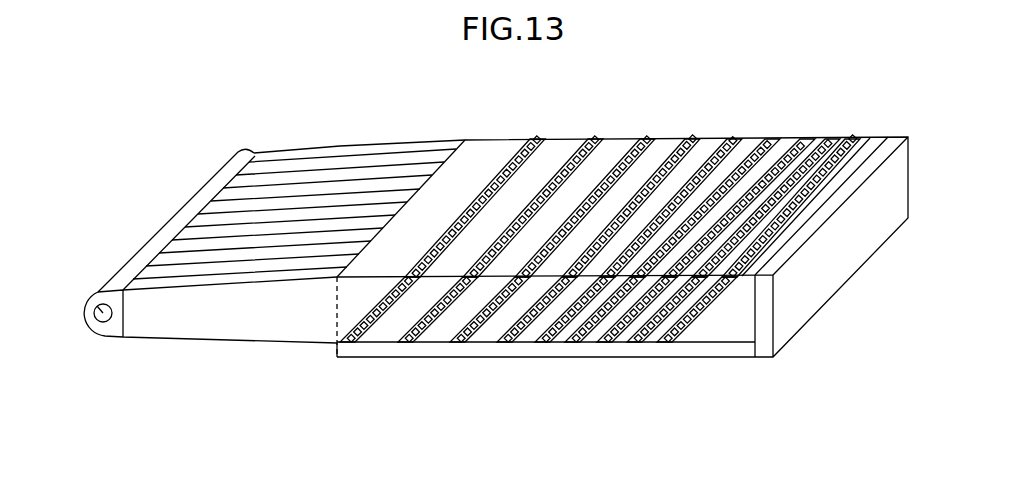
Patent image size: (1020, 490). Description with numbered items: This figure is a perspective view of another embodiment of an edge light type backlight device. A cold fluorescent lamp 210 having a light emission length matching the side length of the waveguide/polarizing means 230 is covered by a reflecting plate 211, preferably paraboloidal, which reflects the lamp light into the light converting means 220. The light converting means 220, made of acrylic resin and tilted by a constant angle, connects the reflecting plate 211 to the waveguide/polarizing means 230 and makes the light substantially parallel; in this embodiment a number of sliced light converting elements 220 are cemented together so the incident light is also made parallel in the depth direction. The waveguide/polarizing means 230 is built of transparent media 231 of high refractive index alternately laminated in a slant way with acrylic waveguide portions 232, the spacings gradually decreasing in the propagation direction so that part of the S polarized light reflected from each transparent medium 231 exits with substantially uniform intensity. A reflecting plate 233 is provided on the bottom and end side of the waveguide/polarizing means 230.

The cold fluorescent lamp 210 is at (95, 292).
The reflecting plate 211 is at (172, 217).
The light converting means 220 is at (95, 408).
The waveguide/polarizing means 230 is at (765, 408).
The transparent media 231 is at (378, 332).
The waveguide portions 232 is at (432, 337).
The reflecting plate 233 is at (503, 348).